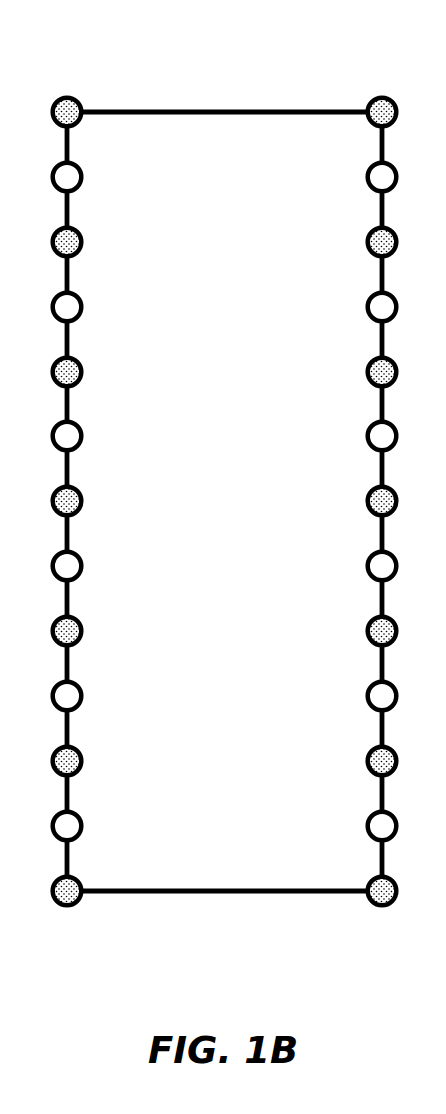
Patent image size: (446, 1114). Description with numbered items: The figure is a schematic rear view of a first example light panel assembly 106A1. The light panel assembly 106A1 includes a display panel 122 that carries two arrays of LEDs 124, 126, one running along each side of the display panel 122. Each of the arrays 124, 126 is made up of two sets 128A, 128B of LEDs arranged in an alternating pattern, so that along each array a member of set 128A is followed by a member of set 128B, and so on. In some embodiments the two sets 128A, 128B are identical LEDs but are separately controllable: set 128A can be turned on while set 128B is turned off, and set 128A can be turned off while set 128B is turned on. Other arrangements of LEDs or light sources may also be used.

The light panel assembly 106A1 is at (233, 99).
The display panel 122 is at (270, 898).
The array of LEDs 124 is at (93, 919).
The array of LEDs 126 is at (410, 919).
The set of LEDs 128A is at (370, 125).
The set of LEDs 128B is at (370, 187).